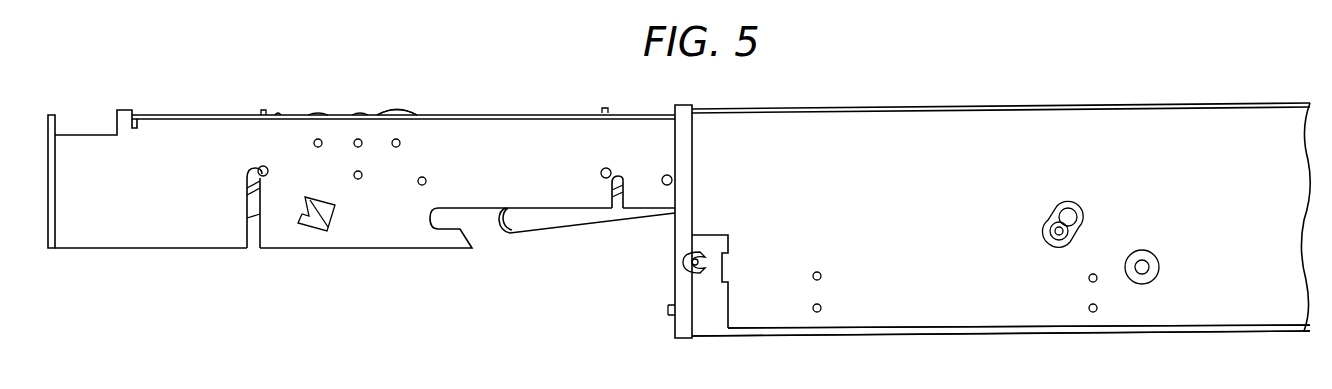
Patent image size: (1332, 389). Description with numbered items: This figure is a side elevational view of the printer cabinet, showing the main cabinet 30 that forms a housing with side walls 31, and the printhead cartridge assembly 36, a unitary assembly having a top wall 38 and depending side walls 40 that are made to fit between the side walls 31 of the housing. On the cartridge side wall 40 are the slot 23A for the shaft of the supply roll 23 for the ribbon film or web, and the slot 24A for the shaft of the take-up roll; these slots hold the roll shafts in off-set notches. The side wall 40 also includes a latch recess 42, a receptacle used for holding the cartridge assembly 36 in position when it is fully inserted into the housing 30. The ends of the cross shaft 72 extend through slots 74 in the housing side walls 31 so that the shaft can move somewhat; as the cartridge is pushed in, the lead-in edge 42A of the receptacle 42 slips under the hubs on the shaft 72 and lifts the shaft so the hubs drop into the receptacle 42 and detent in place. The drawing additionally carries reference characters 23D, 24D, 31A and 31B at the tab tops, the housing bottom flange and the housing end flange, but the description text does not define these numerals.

The supply roll 23 is at (252, 203).
The slot 23A is at (253, 246).
The tab dimple 23D is at (262, 165).
The slot 24A is at (615, 212).
The arm dimple 24D is at (604, 167).
The main cabinet 30 is at (966, 130).
The side walls 31 is at (1025, 305).
The lower flange 31A is at (877, 295).
The end flange 31B is at (713, 318).
The printhead cartridge assembly 36 is at (361, 97).
The top wall 38 is at (443, 117).
The side walls 40 is at (500, 150).
The latch recess 42 is at (443, 221).
The lead-in edge 42A is at (466, 234).
The cross shaft 72 is at (1055, 233).
The slots 74 is at (1068, 216).